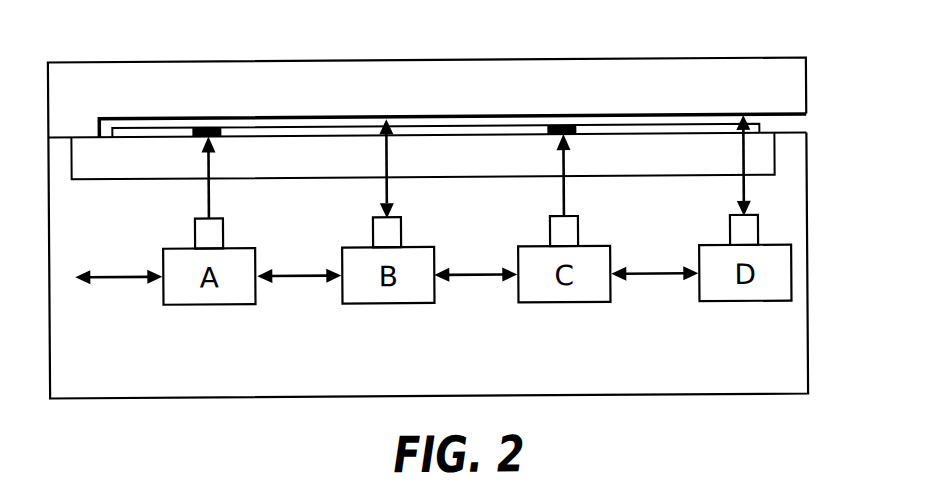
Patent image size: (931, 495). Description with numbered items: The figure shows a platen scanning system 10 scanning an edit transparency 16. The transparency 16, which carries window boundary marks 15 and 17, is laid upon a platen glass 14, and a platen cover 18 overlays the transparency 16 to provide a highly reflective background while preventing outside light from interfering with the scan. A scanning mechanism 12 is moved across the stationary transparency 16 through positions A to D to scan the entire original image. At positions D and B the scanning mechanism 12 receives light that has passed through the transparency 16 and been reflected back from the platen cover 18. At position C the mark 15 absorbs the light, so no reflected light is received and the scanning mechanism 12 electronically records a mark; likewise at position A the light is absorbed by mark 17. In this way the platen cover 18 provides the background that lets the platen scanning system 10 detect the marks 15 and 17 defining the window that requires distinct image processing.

The platen scanning system 10 is at (808, 325).
The scanning mechanism 12 is at (792, 270).
The platen glass 14 is at (775, 155).
The window boundary mark 15 is at (567, 126).
The edit transparency 16 is at (765, 127).
The window boundary mark 17 is at (209, 126).
The platen cover 18 is at (729, 60).